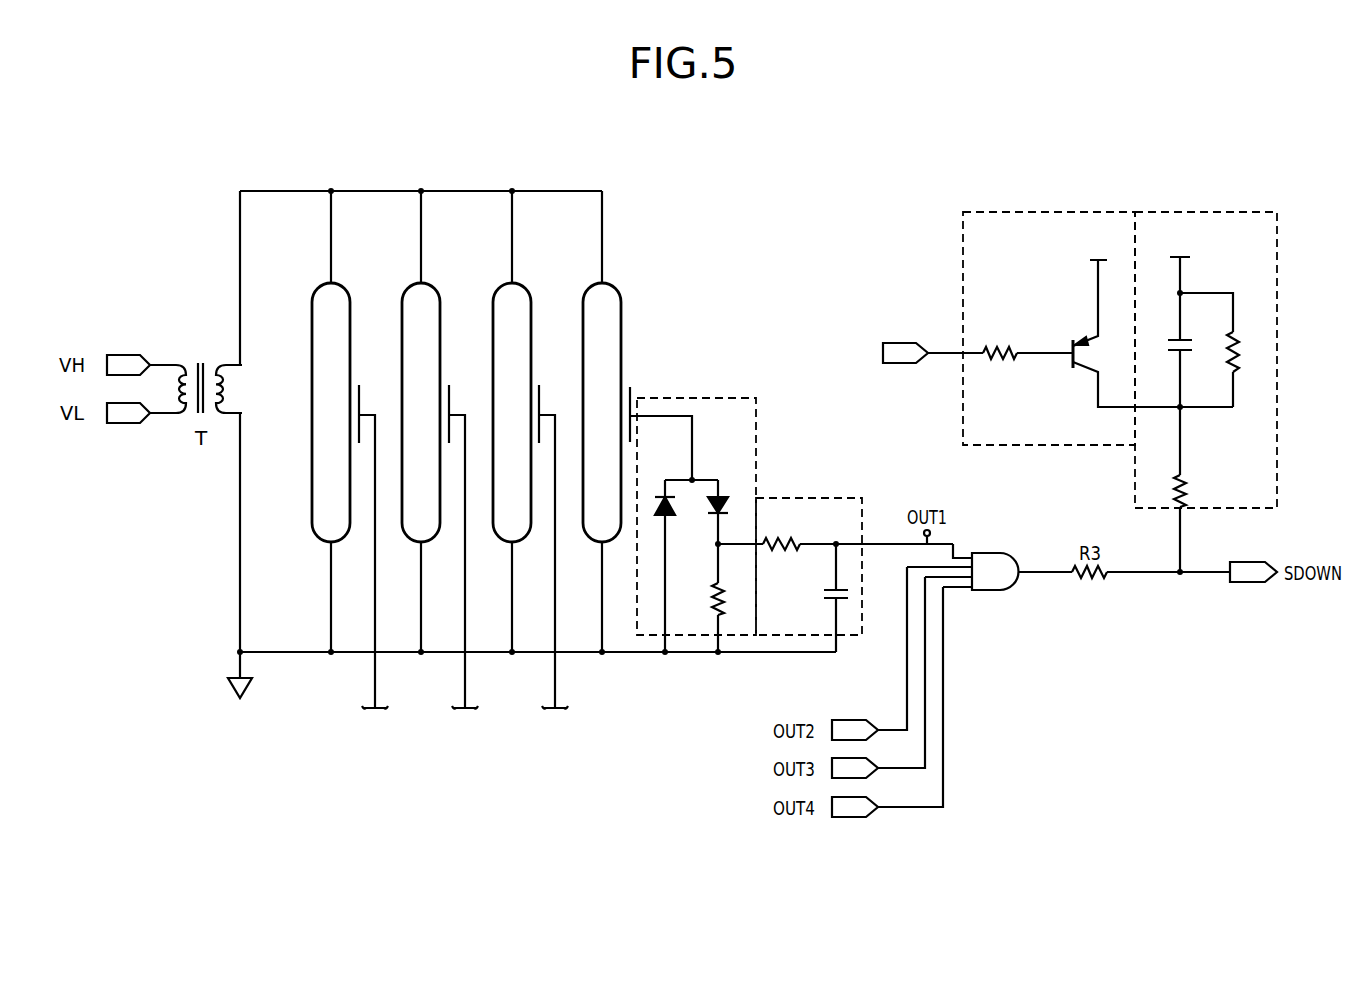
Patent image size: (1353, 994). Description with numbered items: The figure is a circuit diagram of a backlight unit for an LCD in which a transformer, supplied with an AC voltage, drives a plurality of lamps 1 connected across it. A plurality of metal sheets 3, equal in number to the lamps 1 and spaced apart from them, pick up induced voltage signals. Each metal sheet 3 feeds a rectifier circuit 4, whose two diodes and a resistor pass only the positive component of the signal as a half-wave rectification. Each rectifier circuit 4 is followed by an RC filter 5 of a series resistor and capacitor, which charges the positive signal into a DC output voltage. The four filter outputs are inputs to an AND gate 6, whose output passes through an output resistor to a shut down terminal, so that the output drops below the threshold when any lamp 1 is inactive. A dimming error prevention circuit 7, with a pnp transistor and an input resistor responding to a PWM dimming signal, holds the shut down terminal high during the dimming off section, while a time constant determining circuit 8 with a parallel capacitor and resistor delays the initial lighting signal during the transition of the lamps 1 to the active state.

The lamps 1 is at (623, 303).
The metal sheets 3 is at (631, 391).
The rectifier circuits 4 is at (737, 398).
The RC filters 5 is at (806, 498).
The AND gate 6 is at (991, 592).
The dimming error prevention circuit 7 is at (1054, 212).
The time constant determining circuit 8 is at (1236, 212).